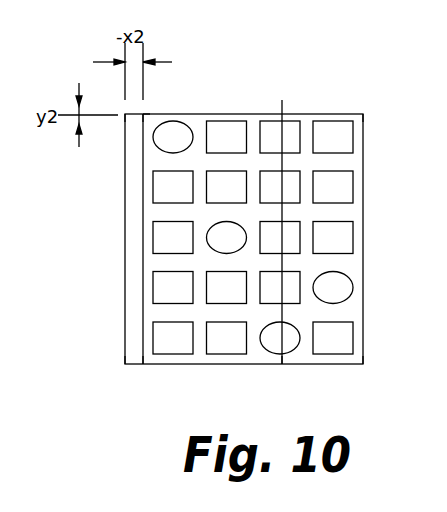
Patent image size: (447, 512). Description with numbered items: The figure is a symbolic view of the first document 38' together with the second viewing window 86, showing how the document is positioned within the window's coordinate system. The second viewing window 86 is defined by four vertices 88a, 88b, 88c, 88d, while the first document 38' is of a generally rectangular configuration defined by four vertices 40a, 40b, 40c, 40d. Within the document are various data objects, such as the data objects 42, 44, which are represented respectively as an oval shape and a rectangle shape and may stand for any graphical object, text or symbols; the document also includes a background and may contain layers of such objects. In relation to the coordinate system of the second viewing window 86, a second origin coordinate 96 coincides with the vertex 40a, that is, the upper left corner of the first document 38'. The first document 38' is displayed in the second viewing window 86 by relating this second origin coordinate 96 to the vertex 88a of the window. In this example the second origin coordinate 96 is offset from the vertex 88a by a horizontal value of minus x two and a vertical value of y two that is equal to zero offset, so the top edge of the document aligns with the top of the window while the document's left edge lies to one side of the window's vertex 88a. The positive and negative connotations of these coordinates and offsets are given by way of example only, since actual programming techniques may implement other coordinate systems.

The first document 38' is at (244, 223).
The vertex 40a is at (143, 114).
The vertex 40b is at (363, 114).
The vertex 40c is at (363, 365).
The vertex 40d is at (143, 365).
The data object 42 is at (178, 130).
The data object 44 is at (222, 130).
The second viewing window 86 is at (125, 255).
The vertex 88a is at (125, 114).
The vertex 88b is at (286, 222).
The vertex 88c is at (282, 365).
The vertex 88d is at (125, 365).
The second origin coordinate 96 is at (187, 73).